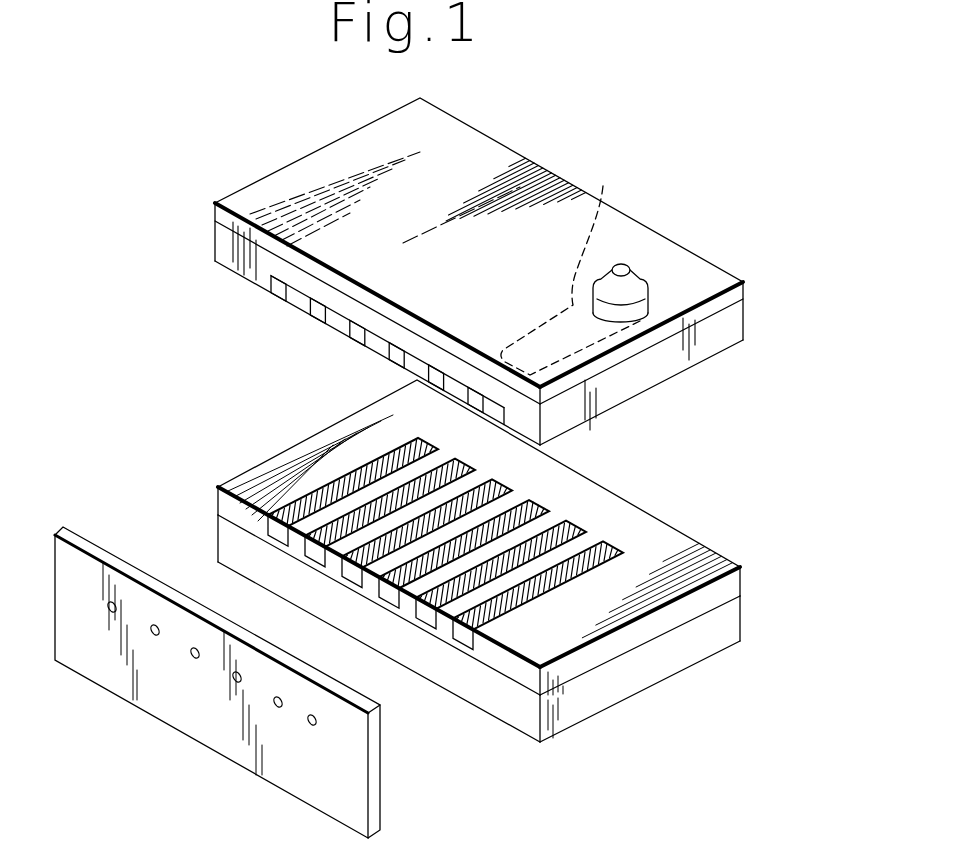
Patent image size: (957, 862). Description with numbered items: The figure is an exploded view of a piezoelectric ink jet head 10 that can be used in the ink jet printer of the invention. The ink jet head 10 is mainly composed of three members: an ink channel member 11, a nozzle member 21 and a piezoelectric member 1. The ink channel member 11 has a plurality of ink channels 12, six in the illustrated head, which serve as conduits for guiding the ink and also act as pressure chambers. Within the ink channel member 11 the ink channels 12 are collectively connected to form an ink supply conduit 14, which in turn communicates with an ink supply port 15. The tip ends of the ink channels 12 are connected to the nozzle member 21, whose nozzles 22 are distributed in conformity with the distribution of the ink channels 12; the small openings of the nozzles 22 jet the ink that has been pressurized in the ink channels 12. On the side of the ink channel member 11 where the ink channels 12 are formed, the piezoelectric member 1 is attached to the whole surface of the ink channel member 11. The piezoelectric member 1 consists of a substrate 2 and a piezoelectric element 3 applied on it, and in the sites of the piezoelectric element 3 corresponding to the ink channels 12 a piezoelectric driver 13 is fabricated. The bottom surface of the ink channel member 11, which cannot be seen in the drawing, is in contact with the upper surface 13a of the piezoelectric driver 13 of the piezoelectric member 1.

The piezoelectric member 1 is at (758, 623).
The substrate 2 is at (645, 676).
The piezoelectric element 3 is at (735, 578).
The ink jet head 10 is at (193, 408).
The ink channel member 11 is at (493, 150).
The ink channels 12 is at (318, 317).
The piezoelectric driver 13 is at (432, 630).
The upper surface of the piezoelectric driver 13a is at (583, 533).
The ink supply conduit 14 is at (570, 266).
The ink supply port 15 is at (638, 286).
The nozzle member 21 is at (172, 708).
The nozzles 22 is at (310, 728).